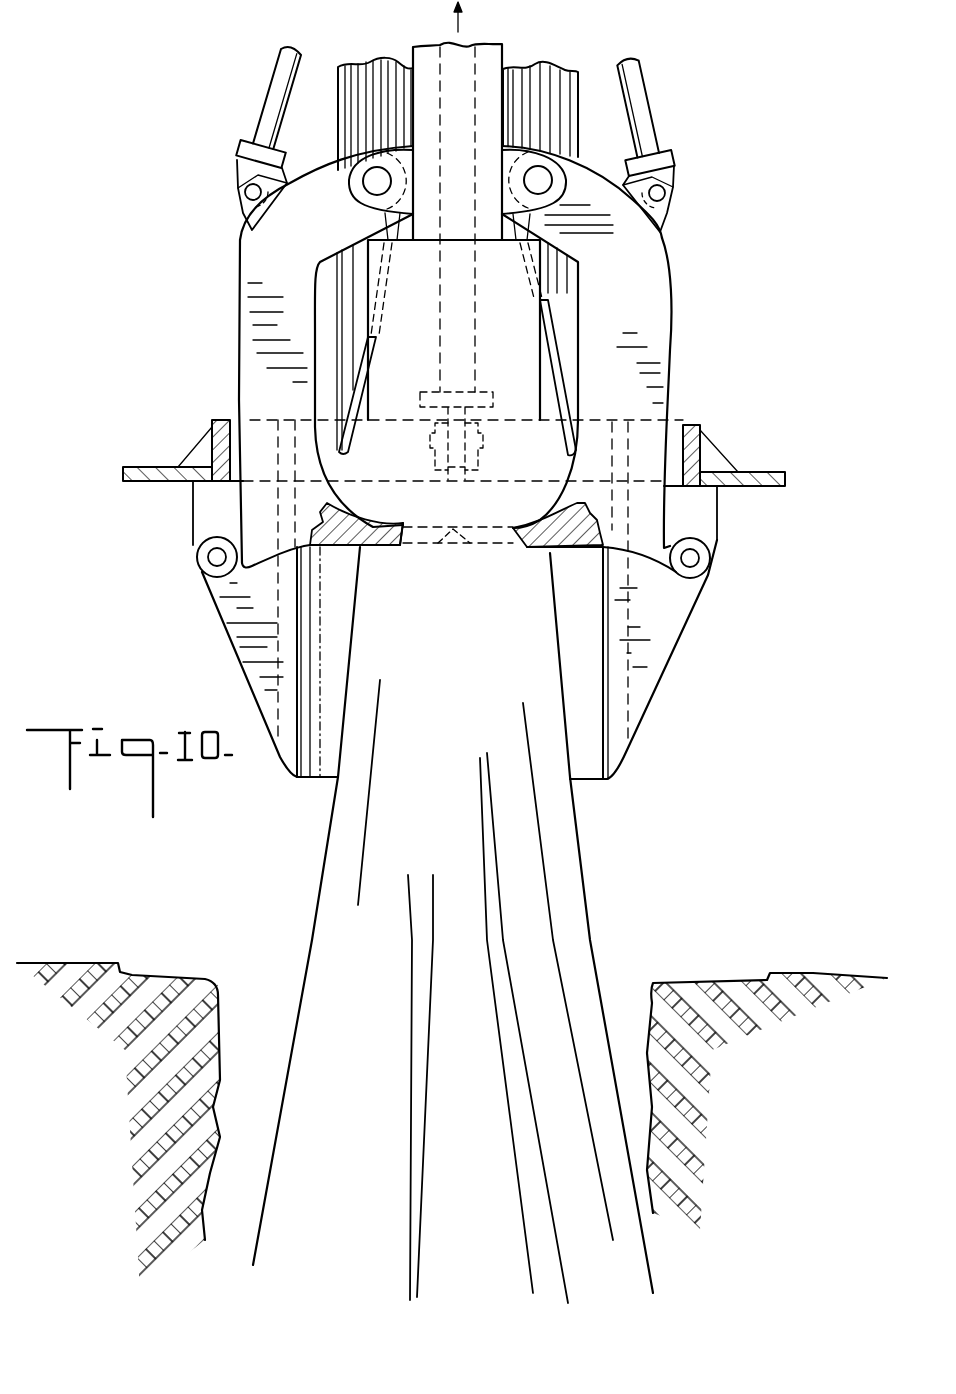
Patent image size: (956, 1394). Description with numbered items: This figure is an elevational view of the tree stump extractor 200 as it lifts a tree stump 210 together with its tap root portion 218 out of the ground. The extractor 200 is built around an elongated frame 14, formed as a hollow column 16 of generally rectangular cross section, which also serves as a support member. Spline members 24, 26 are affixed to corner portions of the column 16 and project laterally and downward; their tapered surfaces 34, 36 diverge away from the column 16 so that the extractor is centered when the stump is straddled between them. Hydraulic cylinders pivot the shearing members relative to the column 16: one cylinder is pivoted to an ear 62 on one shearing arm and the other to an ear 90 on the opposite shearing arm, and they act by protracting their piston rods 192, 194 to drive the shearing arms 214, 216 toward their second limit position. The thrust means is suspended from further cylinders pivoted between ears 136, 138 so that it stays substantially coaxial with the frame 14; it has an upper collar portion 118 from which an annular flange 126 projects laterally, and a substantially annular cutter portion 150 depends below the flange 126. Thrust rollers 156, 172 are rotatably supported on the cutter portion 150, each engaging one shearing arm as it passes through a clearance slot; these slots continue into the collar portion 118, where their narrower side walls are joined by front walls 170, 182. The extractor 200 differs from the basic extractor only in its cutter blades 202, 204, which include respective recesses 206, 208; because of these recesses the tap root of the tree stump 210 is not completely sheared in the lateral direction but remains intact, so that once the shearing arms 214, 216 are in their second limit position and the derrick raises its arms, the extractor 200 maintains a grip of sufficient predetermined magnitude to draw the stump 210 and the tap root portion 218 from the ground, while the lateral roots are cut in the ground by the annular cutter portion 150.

The elongated frame 14 is at (507, 52).
The hollow column 16 is at (492, 46).
The spline member 24 is at (343, 280).
The spline member 26 is at (560, 282).
The tapered surface 34 is at (356, 397).
The tapered surface 36 is at (558, 392).
The ear 62 is at (252, 217).
The ear 90 is at (663, 222).
The upper collar portion 118 is at (587, 420).
The annular flange 126 is at (770, 470).
The ear 136 is at (433, 477).
The ear 138 is at (473, 473).
The annular cutter portion 150 is at (672, 668).
The thrust roller 156 is at (200, 561).
The front wall 170 is at (222, 421).
The thrust roller 172 is at (712, 565).
The front wall 182 is at (693, 425).
The piston rod 192 is at (275, 93).
The piston rod 194 is at (643, 95).
The tree stump extractor 200 is at (727, 150).
The cutter blade 202 is at (370, 545).
The cutter blade 204 is at (527, 550).
The recess 206 is at (422, 545).
The recess 208 is at (468, 538).
The tree stump 210 is at (517, 310).
The shearing arm 214 is at (242, 382).
The shearing arm 216 is at (668, 358).
The tap root portion 218 is at (573, 957).